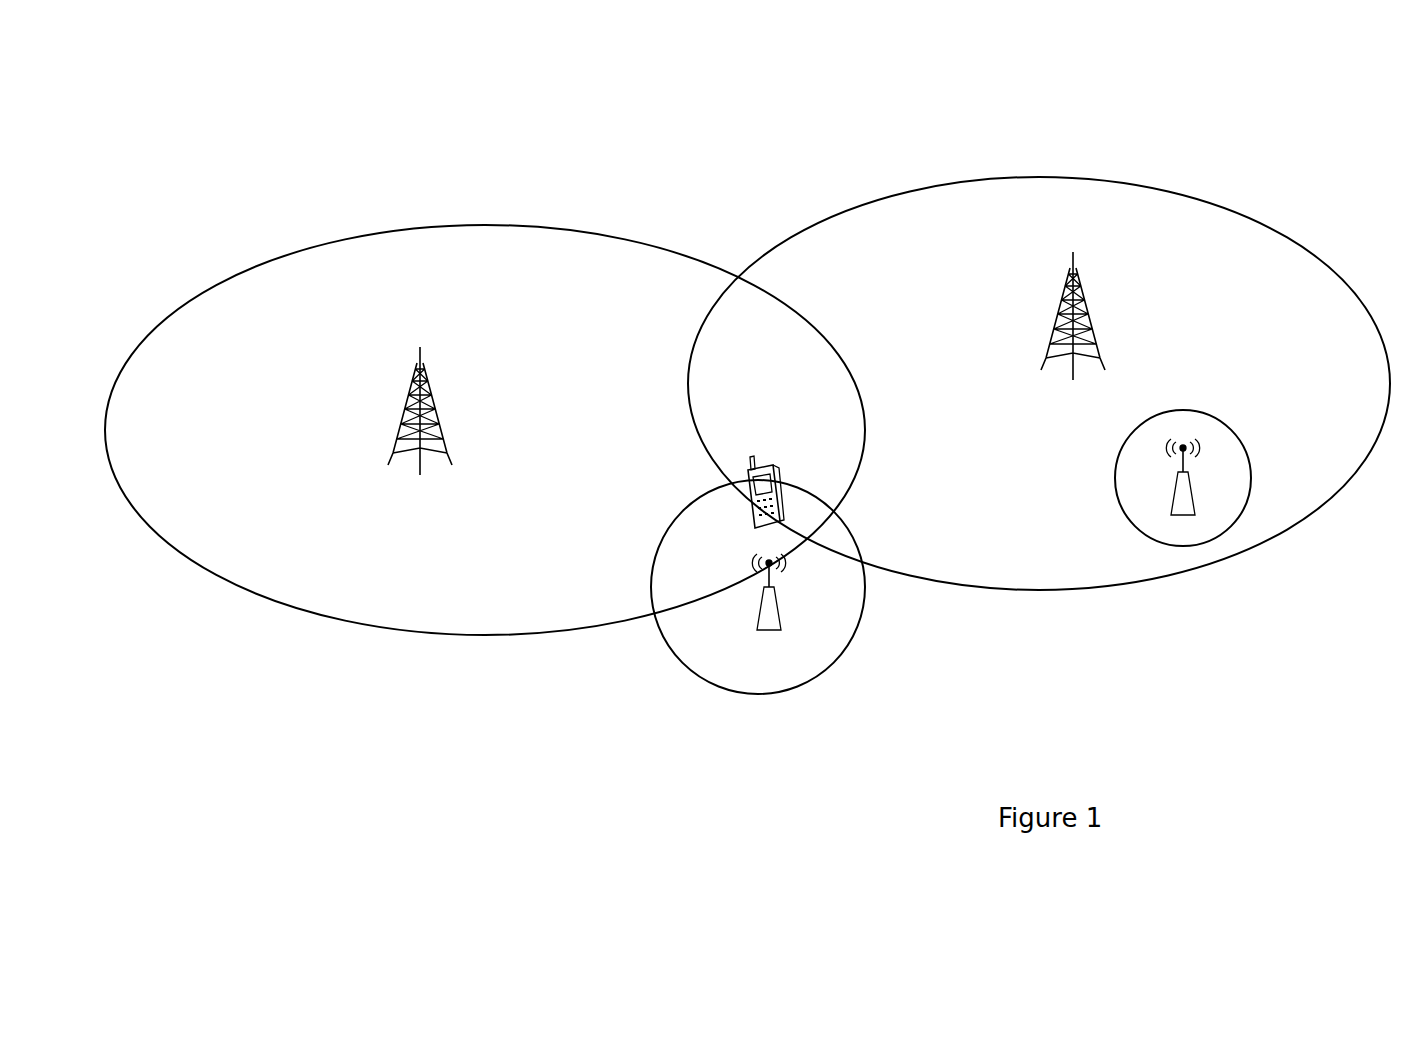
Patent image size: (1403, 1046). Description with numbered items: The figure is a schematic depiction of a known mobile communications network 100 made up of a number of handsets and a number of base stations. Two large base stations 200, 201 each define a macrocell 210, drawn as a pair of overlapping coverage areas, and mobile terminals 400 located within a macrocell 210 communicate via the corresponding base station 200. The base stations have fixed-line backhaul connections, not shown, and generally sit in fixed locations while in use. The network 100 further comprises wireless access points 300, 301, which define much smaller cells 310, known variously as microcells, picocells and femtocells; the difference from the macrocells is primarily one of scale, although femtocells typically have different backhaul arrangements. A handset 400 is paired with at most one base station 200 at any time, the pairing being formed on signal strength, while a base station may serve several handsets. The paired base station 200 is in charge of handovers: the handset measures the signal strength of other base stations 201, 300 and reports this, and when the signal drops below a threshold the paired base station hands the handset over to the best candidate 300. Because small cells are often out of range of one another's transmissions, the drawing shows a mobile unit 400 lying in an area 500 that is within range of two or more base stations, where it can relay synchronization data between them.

The mobile communications network 100 is at (262, 177).
The base station 200 is at (456, 412).
The base station 201 is at (1042, 315).
The macrocell 210 is at (1040, 177).
The wireless access point 300 is at (755, 596).
The base station 301 is at (1184, 519).
The small cell 310 is at (1137, 527).
The mobile terminal 400 is at (745, 502).
The area within range of two or more base stations 500 is at (800, 498).